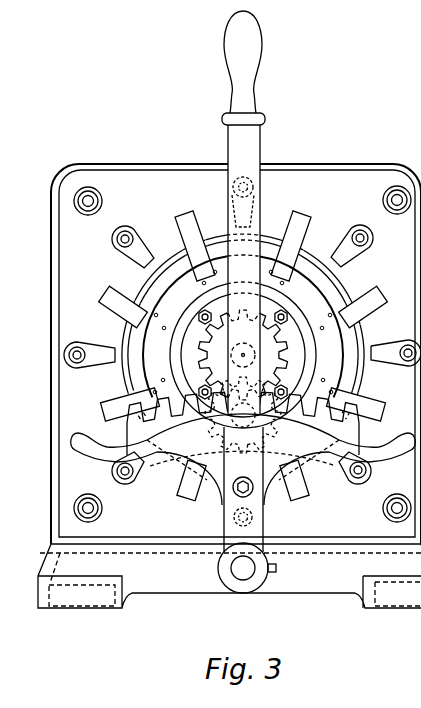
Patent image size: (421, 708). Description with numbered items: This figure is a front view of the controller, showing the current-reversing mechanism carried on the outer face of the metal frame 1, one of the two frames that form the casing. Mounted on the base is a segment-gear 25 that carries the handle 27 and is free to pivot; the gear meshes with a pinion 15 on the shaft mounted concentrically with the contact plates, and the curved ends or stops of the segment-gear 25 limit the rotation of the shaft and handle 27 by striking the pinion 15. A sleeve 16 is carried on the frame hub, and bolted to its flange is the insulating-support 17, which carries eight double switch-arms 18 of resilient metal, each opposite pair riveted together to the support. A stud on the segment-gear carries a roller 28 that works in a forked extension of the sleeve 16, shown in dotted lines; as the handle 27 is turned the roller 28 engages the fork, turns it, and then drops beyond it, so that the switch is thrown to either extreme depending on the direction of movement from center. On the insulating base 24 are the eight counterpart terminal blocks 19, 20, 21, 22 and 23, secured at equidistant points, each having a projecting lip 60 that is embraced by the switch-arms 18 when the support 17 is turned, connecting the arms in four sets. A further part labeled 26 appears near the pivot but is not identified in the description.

The metal frame 1 is at (229, 576).
The pinion 15 is at (243, 355).
The sleeve 16 is at (243, 356).
The insulating-support 17 is at (243, 356).
The double switch-arms 18 is at (243, 326).
The terminal blocks 19 is at (242, 354).
The terminal blocks 20 is at (136, 476).
The terminal block 21 is at (256, 518).
The terminal block 22 is at (233, 187).
The terminal blocks 23 is at (242, 246).
The insulating base 24 is at (236, 354).
The segment-gear 25 is at (250, 493).
The pivot 26 is at (243, 503).
The handle 27 is at (243, 213).
The roller 28 is at (244, 415).
The projecting lip 60 is at (380, 344).